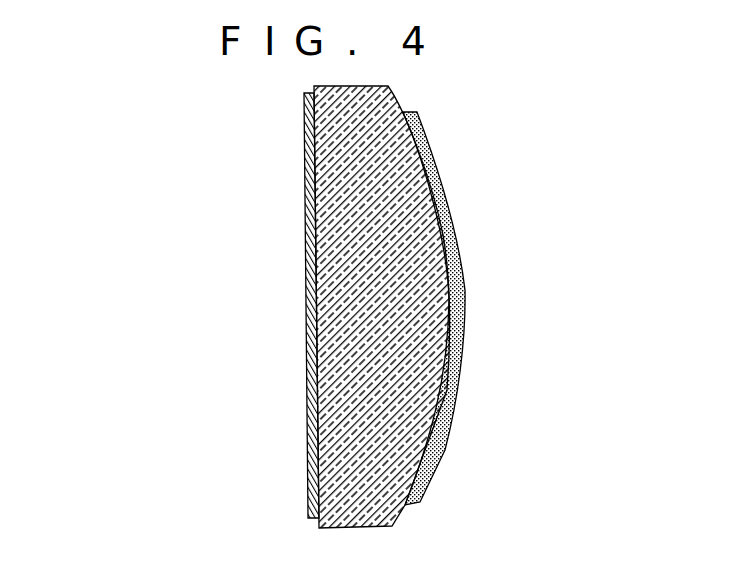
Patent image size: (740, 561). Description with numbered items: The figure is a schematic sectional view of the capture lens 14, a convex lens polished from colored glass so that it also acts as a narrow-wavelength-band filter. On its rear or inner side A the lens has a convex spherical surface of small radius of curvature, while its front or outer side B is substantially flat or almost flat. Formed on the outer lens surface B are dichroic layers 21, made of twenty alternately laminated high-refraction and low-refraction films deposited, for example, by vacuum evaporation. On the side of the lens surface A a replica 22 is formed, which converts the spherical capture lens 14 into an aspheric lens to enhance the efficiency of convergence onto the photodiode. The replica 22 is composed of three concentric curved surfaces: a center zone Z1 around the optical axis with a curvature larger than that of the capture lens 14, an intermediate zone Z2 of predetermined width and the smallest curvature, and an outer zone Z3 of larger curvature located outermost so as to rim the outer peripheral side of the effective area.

The capture lens 14 is at (345, 238).
The dichroic layers 21 is at (307, 149).
The replica 22 is at (465, 273).
The rear or inner side A is at (467, 317).
The front or outer side B is at (318, 339).
The center zone Z1 is at (482, 203).
The intermediate zone Z2 is at (452, 157).
The outer zone Z3 is at (432, 113).